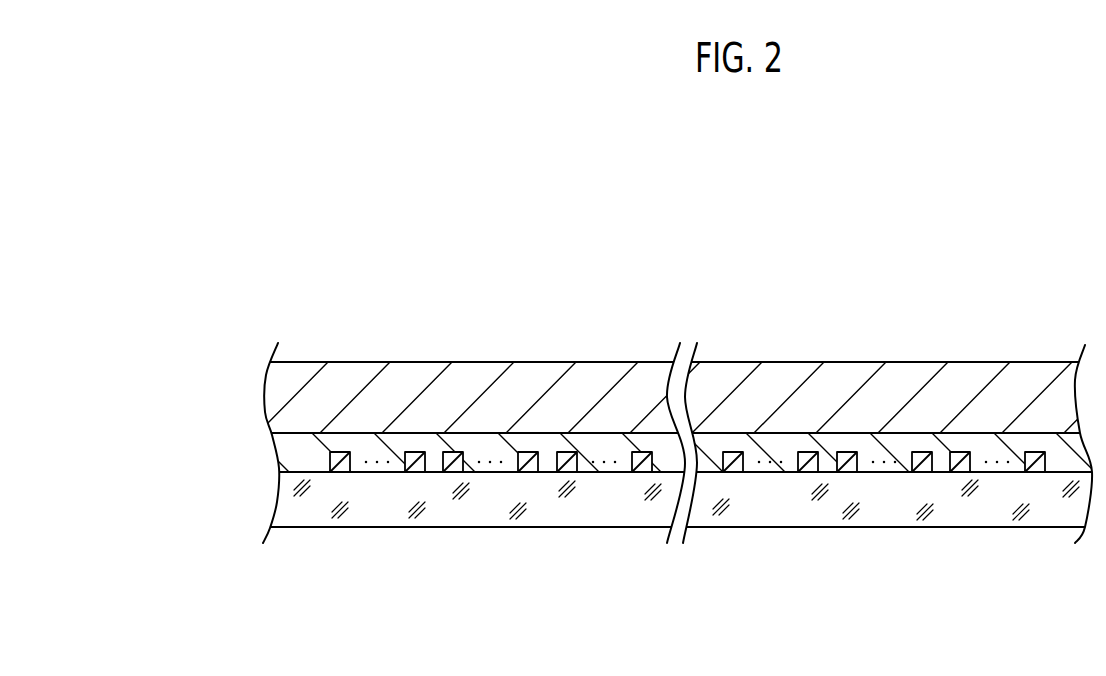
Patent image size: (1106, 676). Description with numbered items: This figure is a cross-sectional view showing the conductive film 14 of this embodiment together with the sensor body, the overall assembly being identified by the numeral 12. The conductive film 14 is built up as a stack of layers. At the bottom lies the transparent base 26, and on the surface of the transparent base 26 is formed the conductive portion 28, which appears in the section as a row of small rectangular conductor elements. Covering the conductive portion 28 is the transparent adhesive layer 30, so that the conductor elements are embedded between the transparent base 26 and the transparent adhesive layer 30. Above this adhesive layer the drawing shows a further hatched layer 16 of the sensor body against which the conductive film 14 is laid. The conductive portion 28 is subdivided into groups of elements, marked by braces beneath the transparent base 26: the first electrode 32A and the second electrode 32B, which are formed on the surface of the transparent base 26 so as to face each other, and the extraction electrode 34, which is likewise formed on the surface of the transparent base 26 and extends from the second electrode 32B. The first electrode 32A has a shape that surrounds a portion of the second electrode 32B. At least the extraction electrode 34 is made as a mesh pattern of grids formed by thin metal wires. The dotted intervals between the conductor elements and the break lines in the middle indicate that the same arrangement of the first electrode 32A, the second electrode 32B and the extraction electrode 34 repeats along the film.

The display device with touch panel 12 is at (357, 275).
The conductive film 14 is at (248, 435).
The cover member 16 is at (794, 372).
The transparent base 26 is at (1048, 517).
The conductive portion 28 is at (921, 452).
The transparent adhesive layer 30 is at (997, 448).
The first electrode 32A is at (427, 472).
The second electrode 32B is at (540, 472).
The extraction electrode 34 is at (654, 472).